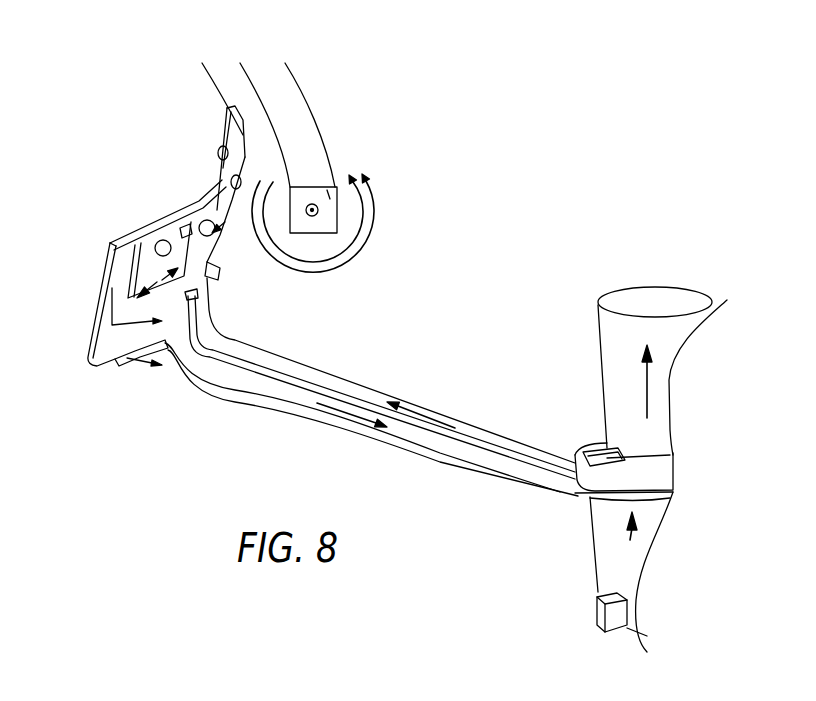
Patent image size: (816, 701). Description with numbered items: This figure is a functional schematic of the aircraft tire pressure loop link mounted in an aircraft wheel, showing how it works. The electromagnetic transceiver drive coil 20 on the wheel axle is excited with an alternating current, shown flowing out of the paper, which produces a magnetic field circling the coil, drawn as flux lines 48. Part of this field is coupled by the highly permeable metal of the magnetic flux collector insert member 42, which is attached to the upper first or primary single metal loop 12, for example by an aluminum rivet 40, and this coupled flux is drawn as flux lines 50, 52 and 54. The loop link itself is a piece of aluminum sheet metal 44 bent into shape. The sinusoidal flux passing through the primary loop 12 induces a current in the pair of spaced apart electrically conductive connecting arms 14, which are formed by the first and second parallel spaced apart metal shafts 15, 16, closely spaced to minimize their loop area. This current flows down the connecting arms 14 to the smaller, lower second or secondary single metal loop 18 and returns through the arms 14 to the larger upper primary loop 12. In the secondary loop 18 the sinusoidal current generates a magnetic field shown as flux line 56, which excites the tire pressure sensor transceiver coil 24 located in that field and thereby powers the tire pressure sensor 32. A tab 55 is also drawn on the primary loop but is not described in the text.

The first or primary single metal loop 12 is at (81, 315).
The pair of spaced apart electrically conductive connecting arms 14 is at (446, 349).
The metal shaft 15 is at (482, 437).
The metal shaft 16 is at (448, 442).
The second or secondary single metal loop 18 is at (610, 498).
The electromagnetic transceiver drive coil 20 is at (303, 110).
The tire pressure sensor transceiver coil 24 is at (630, 540).
The tire pressure sensor 32 is at (630, 303).
The aluminum rivet 40 is at (162, 240).
The magnetic flux collector insert member 42 is at (210, 207).
The aluminum sheet metal piece 44 is at (298, 372).
The flux lines 48 is at (367, 240).
The flux line 50 is at (121, 240).
The flux line 52 is at (186, 230).
The flux line 54 is at (228, 200).
The current tab 55 is at (128, 360).
The flux line 56 is at (644, 393).